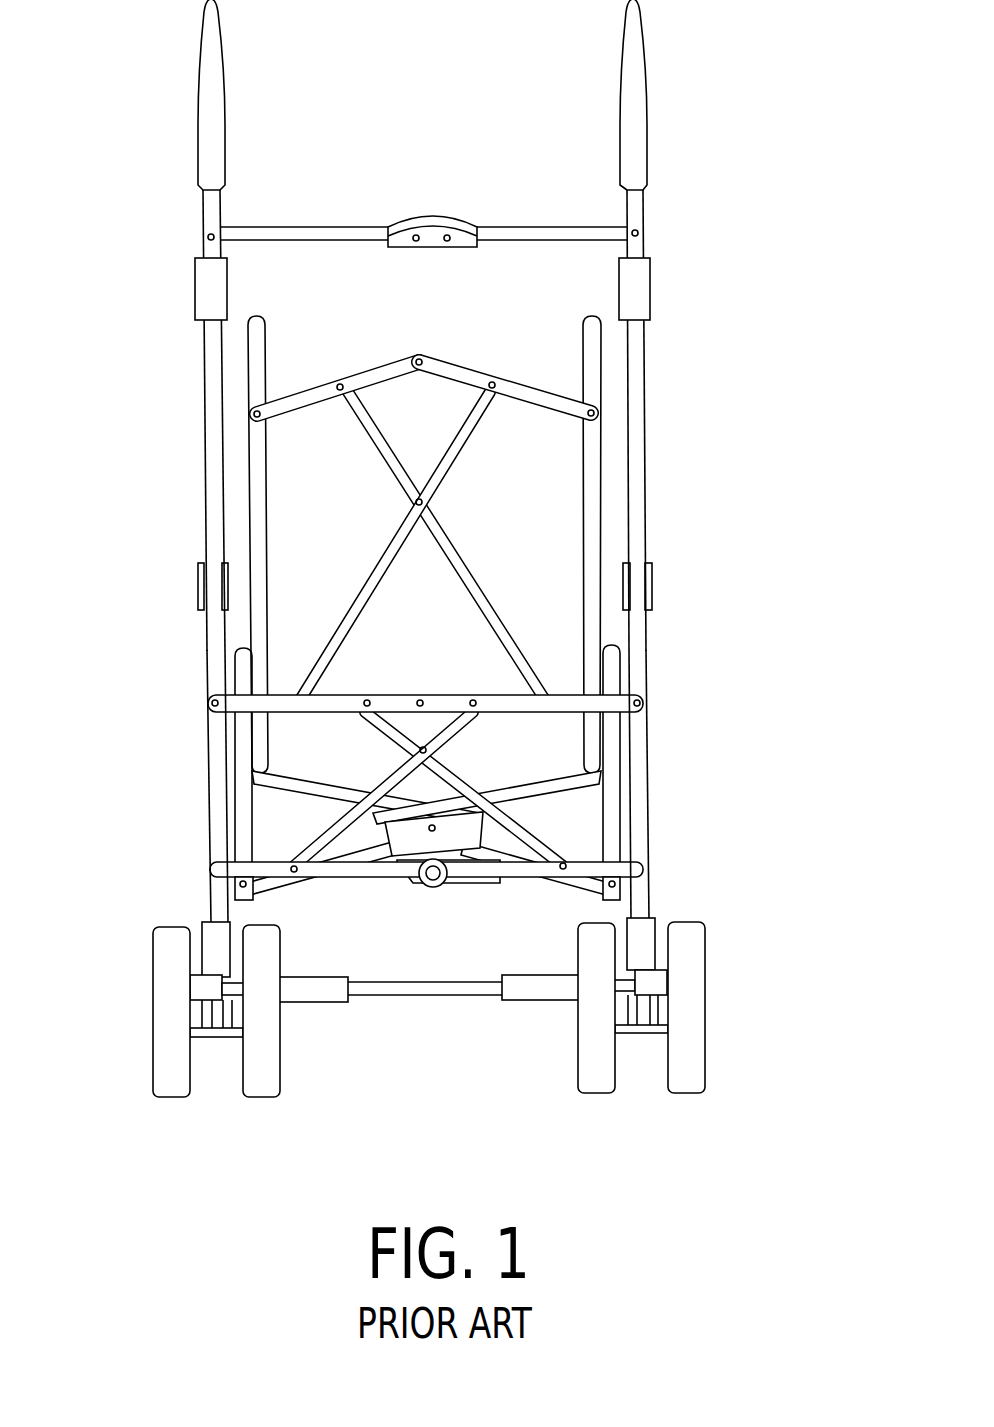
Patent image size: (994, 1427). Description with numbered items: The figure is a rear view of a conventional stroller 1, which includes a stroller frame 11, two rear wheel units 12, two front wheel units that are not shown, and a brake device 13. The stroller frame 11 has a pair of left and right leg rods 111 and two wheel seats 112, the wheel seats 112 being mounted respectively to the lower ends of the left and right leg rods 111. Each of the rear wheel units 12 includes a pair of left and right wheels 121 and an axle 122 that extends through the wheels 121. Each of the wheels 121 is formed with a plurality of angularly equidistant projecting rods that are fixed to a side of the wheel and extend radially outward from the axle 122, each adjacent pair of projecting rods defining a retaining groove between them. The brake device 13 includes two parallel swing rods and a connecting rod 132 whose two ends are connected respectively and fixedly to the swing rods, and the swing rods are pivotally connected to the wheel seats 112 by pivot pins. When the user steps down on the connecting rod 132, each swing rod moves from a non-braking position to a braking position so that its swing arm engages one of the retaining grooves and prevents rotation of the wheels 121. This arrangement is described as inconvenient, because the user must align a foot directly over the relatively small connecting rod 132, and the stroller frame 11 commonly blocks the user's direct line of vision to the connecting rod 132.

The stroller 1 is at (662, 462).
The stroller frame 11 is at (646, 527).
The leg rods 111 is at (210, 760).
The wheel seats 112 is at (218, 932).
The rear wheel units 12 is at (452, 1027).
The wheels 121 is at (700, 1045).
The axle 122 is at (643, 1035).
The brake device 13 is at (428, 1043).
The connecting rod 132 is at (402, 993).